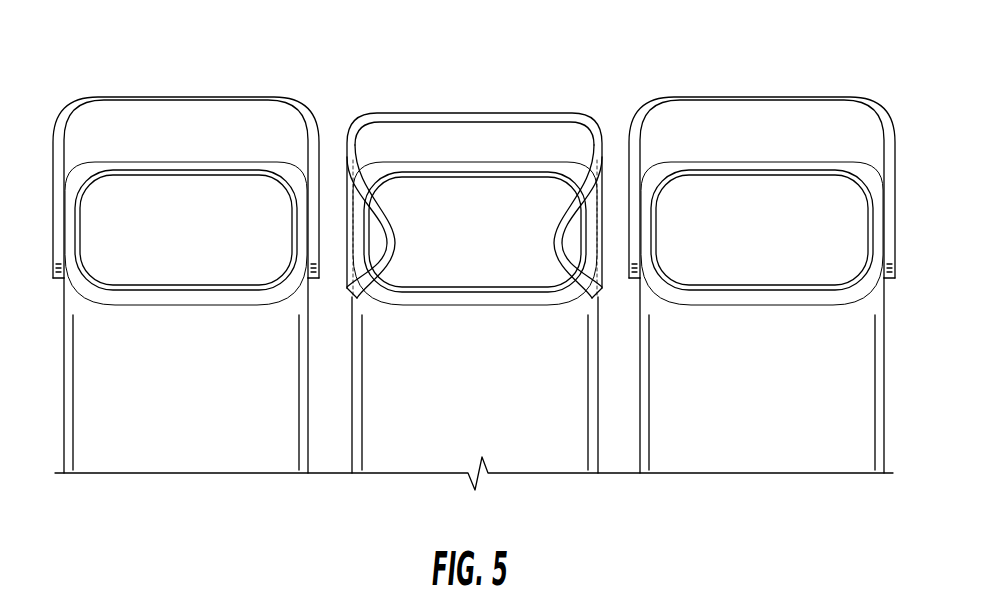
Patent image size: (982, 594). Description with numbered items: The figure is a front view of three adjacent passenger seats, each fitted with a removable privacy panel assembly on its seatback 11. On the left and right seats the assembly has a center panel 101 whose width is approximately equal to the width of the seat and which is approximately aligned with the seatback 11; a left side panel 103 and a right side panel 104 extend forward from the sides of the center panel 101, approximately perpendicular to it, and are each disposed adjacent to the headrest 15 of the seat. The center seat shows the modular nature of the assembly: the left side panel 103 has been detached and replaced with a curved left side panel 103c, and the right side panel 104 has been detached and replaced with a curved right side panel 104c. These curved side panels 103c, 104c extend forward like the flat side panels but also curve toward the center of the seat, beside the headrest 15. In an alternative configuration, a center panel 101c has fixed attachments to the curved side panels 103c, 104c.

The seatback 11 is at (110, 430).
The headrest 15 is at (138, 240).
The center panel 101 is at (143, 122).
The left side panel 103 is at (312, 268).
The right side panel 104 is at (57, 222).
The center panel 101c is at (432, 138).
The curved left side panel 103c is at (580, 258).
The curved right side panel 104c is at (362, 250).